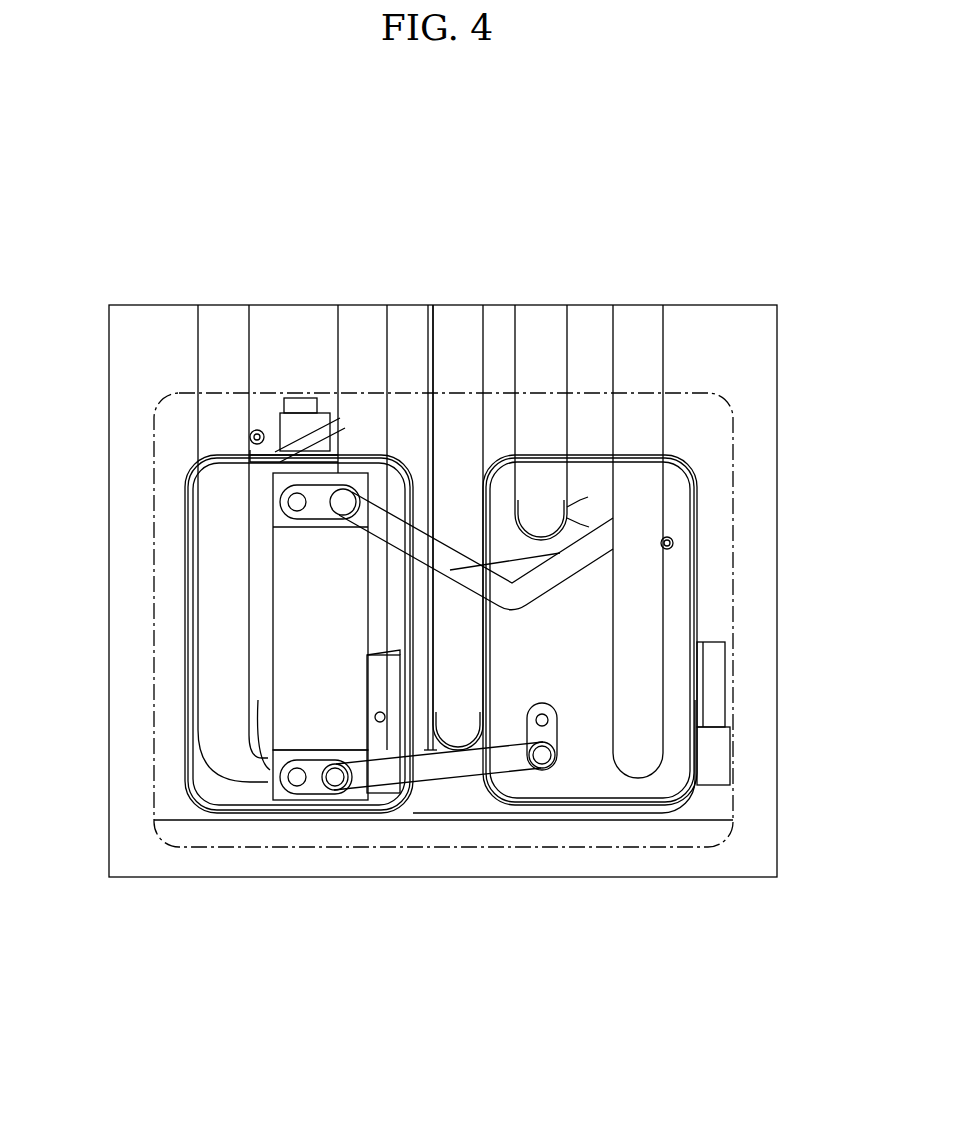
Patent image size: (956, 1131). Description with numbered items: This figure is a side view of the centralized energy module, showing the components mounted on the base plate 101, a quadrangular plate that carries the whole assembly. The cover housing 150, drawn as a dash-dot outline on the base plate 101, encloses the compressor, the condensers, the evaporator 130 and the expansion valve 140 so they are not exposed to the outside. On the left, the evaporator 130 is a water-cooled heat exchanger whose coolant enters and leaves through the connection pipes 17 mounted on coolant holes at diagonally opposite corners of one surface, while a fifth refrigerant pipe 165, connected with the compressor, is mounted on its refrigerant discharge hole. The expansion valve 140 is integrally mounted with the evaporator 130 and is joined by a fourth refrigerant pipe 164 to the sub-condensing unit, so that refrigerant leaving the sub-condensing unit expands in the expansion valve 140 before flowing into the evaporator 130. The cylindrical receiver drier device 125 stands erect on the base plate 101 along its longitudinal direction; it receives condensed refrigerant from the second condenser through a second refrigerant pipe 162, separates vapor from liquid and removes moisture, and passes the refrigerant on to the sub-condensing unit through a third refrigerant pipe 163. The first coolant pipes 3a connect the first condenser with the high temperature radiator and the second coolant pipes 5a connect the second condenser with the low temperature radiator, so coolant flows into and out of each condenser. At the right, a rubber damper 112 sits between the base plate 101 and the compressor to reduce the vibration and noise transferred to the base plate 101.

The connection pipe 17 is at (338, 335).
The fifth refrigerant pipe 165 is at (385, 553).
The first coolant pipe 3a is at (455, 330).
The second coolant pipe 5a is at (567, 337).
The evaporator 130 is at (186, 537).
The cover housing 150 is at (154, 617).
The receiver drier device 125 is at (300, 683).
The fourth refrigerant pipe 164 is at (337, 750).
The expansion valve 140 is at (385, 740).
The third refrigerant pipe 163 is at (457, 775).
The second refrigerant pipe 162 is at (583, 585).
The damper 112 is at (720, 757).
The base plate 101 is at (668, 832).